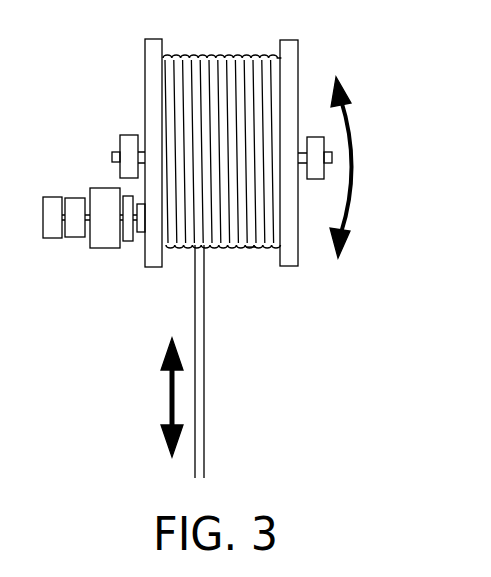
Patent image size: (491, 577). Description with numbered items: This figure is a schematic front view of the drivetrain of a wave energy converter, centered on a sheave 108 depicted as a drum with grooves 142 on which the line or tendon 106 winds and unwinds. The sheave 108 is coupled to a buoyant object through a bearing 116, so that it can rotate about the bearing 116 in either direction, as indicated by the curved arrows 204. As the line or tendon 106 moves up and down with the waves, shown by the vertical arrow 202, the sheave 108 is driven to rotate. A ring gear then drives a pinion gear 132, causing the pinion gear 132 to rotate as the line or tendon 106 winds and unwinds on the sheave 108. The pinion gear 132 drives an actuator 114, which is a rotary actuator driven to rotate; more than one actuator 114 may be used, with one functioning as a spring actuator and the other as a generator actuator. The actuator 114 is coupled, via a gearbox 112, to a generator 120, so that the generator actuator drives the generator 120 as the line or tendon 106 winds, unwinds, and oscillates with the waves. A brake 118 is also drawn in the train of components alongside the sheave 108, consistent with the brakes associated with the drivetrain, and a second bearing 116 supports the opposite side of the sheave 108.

The line or tendon 106 is at (186, 60).
The sheave 108 is at (298, 51).
The gearbox 112 is at (75, 225).
The actuator 114 is at (104, 200).
The bearing 116 is at (127, 146).
The brake 118 is at (127, 235).
The generator 120 is at (52, 204).
The pinion gear 132 is at (140, 220).
The grooves 142 is at (250, 247).
The arrow 202 is at (165, 402).
The arrows 204 is at (355, 88).